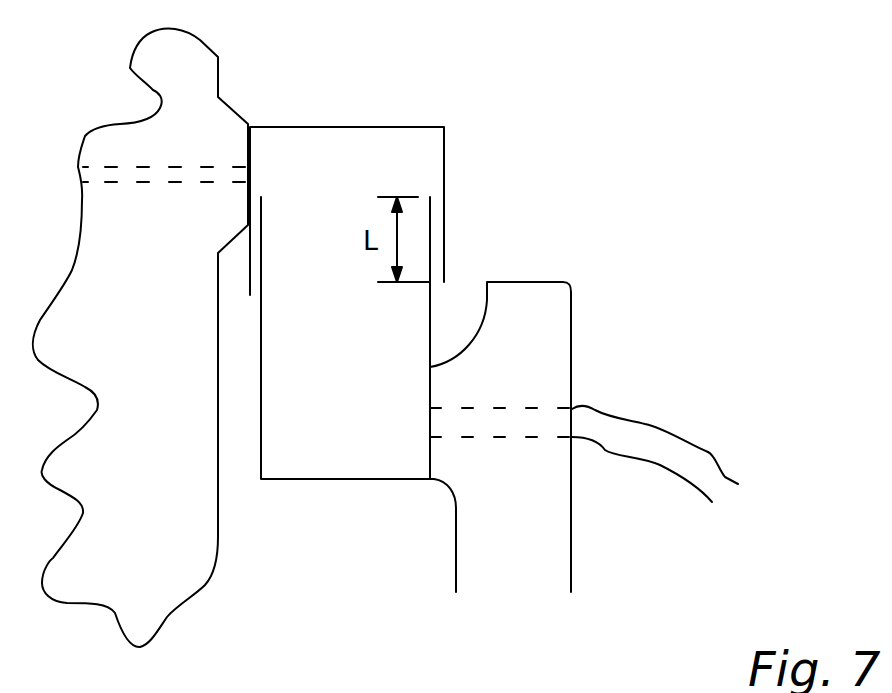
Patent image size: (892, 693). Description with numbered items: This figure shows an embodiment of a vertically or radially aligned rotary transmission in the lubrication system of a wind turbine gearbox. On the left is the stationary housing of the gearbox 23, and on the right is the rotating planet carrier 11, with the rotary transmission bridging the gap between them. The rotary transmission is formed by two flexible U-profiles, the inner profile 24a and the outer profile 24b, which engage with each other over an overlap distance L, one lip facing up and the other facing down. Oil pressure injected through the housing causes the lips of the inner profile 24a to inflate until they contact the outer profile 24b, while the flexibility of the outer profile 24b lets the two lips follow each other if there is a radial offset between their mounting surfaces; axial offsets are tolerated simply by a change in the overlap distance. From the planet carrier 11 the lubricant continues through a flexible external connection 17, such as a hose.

The stationary housing of the gearbox 23 is at (175, 78).
The inner profile 24a is at (275, 480).
The outer profile 24b is at (373, 127).
The planet carrier 11 is at (557, 298).
The flexible external connection 17 is at (708, 452).